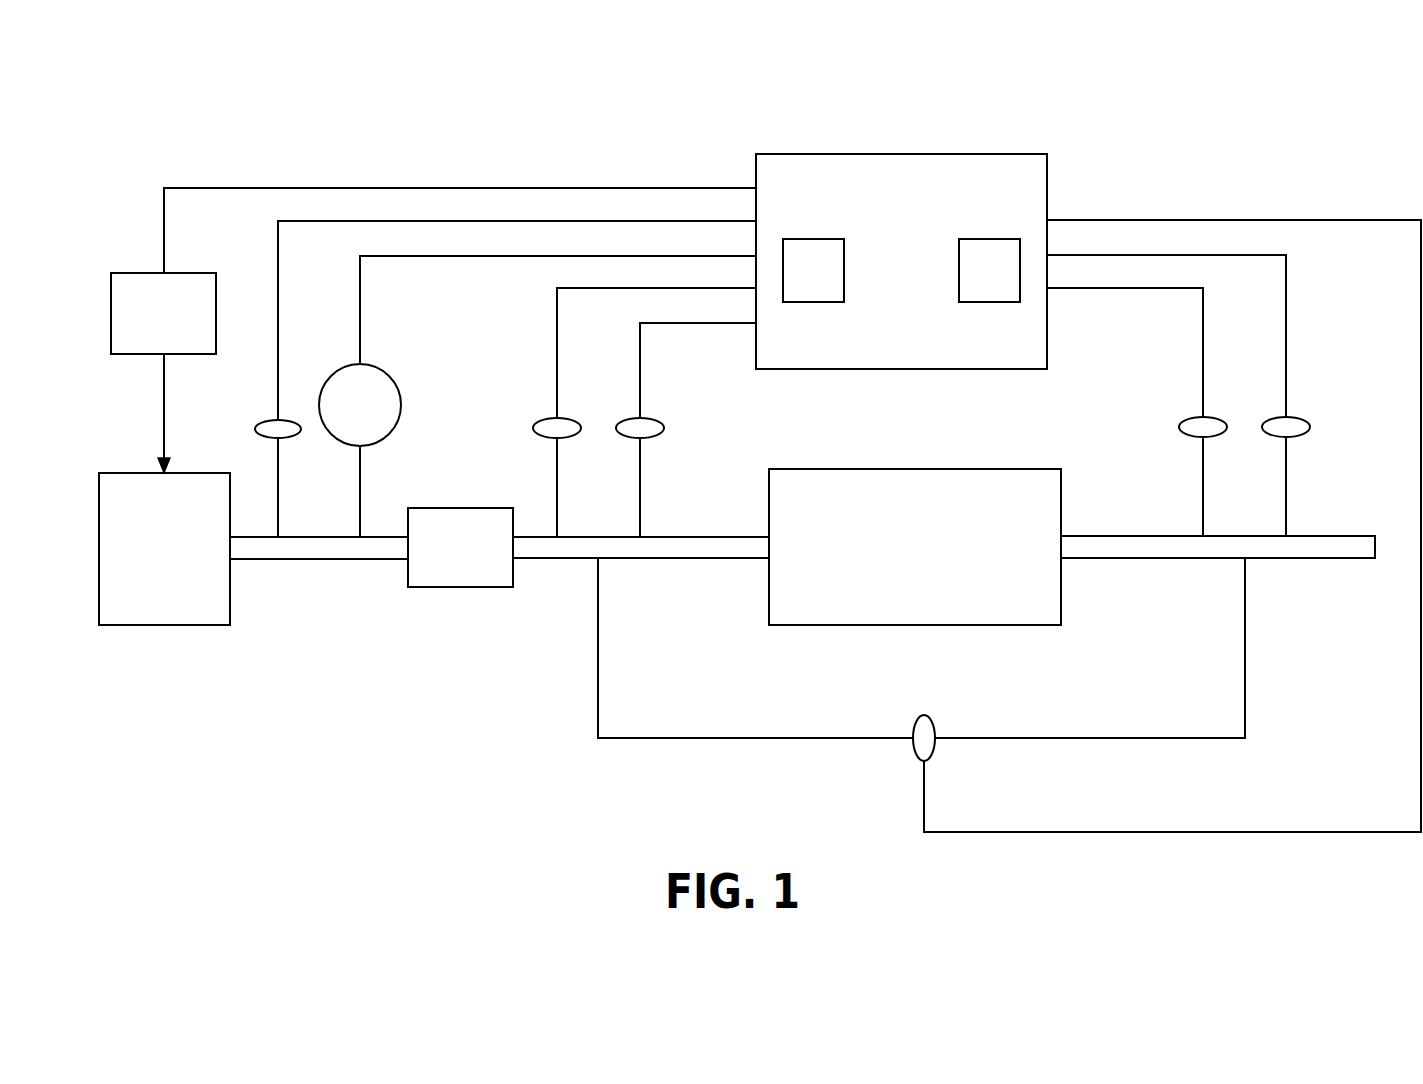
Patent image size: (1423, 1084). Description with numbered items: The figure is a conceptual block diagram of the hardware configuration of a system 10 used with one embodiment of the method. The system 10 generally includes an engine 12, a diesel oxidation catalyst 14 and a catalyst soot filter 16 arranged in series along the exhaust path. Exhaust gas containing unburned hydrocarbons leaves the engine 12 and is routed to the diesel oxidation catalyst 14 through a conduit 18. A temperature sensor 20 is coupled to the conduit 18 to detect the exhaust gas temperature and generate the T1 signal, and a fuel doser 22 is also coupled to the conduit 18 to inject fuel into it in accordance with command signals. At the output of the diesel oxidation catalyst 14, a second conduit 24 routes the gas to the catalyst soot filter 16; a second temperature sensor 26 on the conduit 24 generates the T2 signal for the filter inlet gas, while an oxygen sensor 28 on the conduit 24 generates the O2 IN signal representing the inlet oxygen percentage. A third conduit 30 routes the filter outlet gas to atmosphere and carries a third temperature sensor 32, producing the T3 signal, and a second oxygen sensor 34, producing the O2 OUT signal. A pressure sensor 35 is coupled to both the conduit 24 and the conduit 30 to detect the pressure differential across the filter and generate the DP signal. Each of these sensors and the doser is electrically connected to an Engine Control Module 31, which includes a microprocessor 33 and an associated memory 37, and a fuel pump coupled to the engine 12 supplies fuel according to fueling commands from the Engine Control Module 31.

The system 10 is at (330, 742).
The engine 12 is at (166, 625).
The diesel oxidation catalyst 14 is at (472, 586).
The catalyst soot filter 16 is at (918, 480).
The conduit 18 is at (314, 553).
The temperature sensor 20 is at (263, 420).
The fuel doser 22 is at (380, 372).
The conduit 24 is at (700, 553).
The second temperature sensor 26 is at (540, 418).
The oxygen sensor 28 is at (650, 418).
The third conduit 30 is at (1125, 552).
The Engine Control Module 31 is at (908, 173).
The third temperature sensor 32 is at (1195, 418).
The microprocessor 33 is at (813, 270).
The second oxygen sensor 34 is at (1298, 420).
The pressure sensor 35 is at (923, 714).
The memory 37 is at (137, 272).